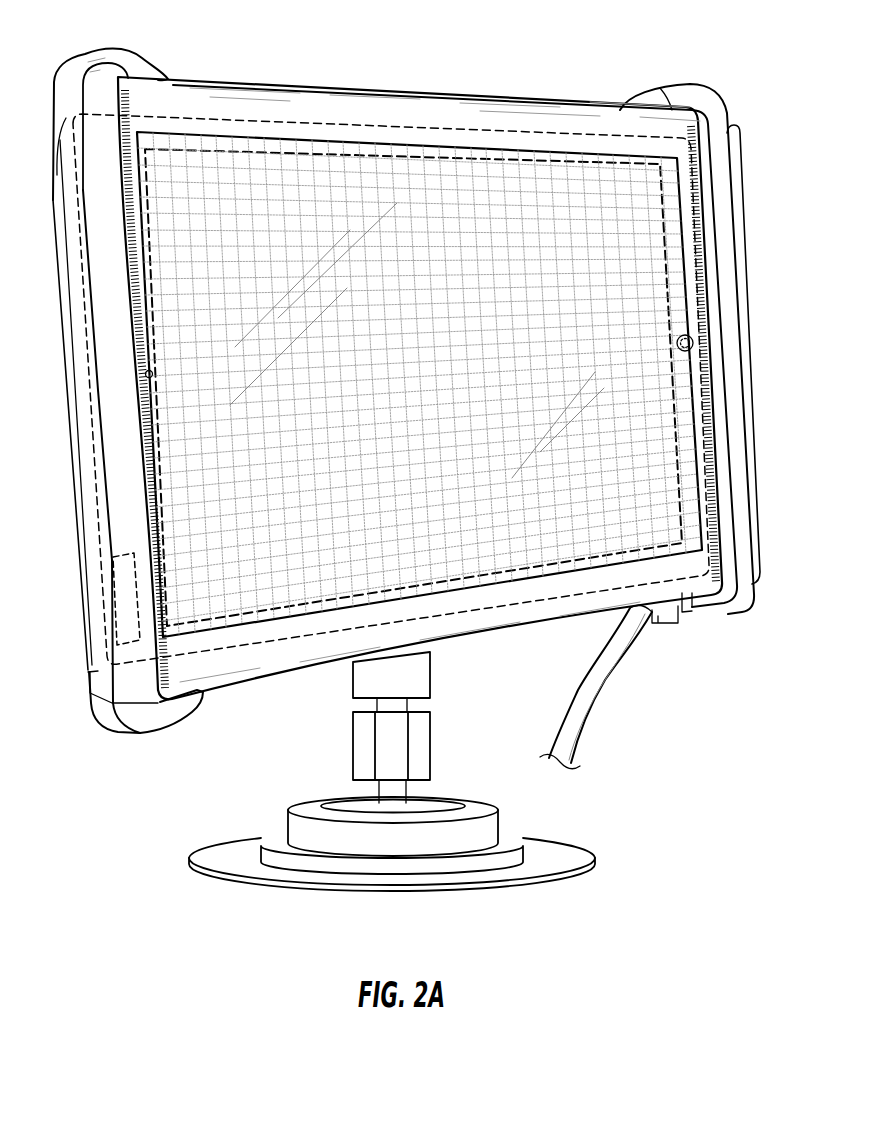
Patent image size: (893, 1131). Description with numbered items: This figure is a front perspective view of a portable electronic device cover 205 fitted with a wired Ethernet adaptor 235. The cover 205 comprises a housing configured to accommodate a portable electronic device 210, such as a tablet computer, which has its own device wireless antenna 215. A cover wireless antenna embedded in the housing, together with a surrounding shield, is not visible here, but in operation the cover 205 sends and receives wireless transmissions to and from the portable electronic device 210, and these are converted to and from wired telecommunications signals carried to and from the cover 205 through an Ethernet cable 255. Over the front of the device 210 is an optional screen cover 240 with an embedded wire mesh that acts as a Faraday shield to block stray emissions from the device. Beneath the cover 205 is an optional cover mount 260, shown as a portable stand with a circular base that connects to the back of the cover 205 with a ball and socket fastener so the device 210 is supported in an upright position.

The portable electronic device cover 205 is at (702, 100).
The portable electronic device 210 is at (296, 126).
The device wireless antenna 215 is at (122, 605).
The wired Ethernet adaptor 235 is at (658, 630).
The screen cover 240 is at (547, 187).
The Ethernet cable 255 is at (574, 704).
The cover mount 260 is at (354, 750).